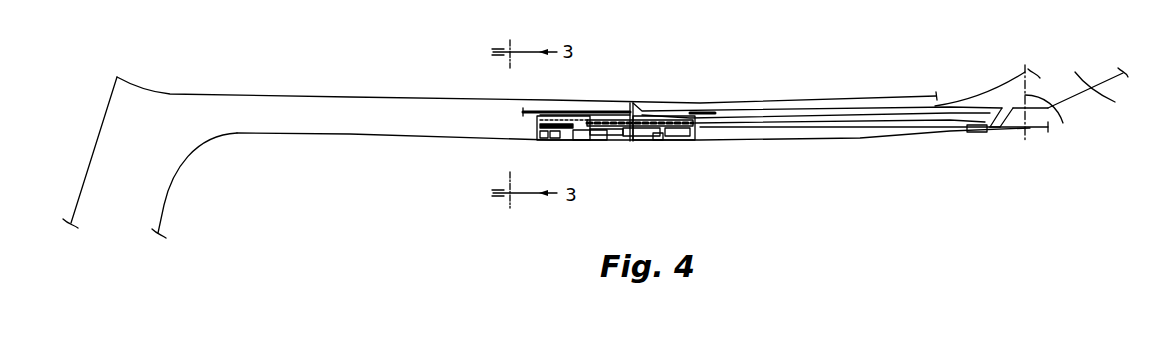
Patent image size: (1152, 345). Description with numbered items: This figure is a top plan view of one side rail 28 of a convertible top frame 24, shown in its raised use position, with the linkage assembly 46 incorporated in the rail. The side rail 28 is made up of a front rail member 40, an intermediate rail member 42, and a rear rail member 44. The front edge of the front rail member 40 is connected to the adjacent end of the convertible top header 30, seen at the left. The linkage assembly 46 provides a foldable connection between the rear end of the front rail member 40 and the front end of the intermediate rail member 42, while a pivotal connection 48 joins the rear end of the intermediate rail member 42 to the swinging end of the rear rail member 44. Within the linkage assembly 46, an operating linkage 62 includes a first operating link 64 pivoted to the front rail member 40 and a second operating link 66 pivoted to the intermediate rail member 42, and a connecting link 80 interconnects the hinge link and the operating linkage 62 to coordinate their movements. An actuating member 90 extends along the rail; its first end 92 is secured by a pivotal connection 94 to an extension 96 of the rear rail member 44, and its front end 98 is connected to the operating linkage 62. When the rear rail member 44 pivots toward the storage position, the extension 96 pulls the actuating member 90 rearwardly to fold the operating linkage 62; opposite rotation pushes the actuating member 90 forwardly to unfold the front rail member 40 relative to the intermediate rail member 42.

The convertible top frame 24 is at (587, 62).
The side rail 28 is at (722, 92).
The convertible top header 30 is at (157, 185).
The front rail member 40 is at (273, 117).
The intermediate rail member 42 is at (777, 132).
The rear rail member 44 is at (1096, 93).
The linkage assembly 46 is at (664, 100).
The pivotal connection 48 is at (1063, 123).
The operating linkage 62 is at (577, 142).
The first operating link 64 is at (566, 118).
The second operating link 66 is at (610, 142).
The connecting link 80 is at (617, 115).
The actuating member 90 is at (858, 125).
The first end 92 is at (942, 123).
The pivotal connection 94 is at (975, 135).
The extension 96 is at (998, 132).
The front end 98 is at (704, 127).